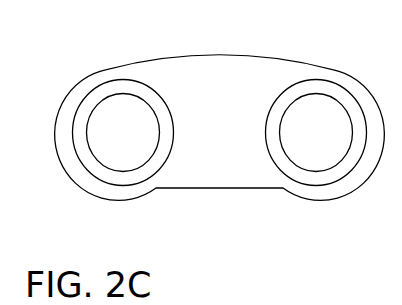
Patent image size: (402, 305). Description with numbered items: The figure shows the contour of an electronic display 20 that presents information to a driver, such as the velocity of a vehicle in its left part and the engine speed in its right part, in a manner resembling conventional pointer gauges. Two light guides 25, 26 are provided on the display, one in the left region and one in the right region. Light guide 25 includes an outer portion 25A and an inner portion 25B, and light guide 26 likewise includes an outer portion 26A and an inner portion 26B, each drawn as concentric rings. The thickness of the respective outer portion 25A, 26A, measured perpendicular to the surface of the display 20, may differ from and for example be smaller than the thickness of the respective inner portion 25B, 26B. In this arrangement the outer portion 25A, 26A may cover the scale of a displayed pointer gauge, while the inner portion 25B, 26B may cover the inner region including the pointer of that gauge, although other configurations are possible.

The electronic display 20 is at (90, 77).
The light guide 25 is at (153, 138).
The outer portion 25A is at (146, 93).
The inner portion 25B is at (147, 138).
The light guide 26 is at (284, 138).
The outer portion 26A is at (291, 93).
The inner portion 26B is at (298, 125).